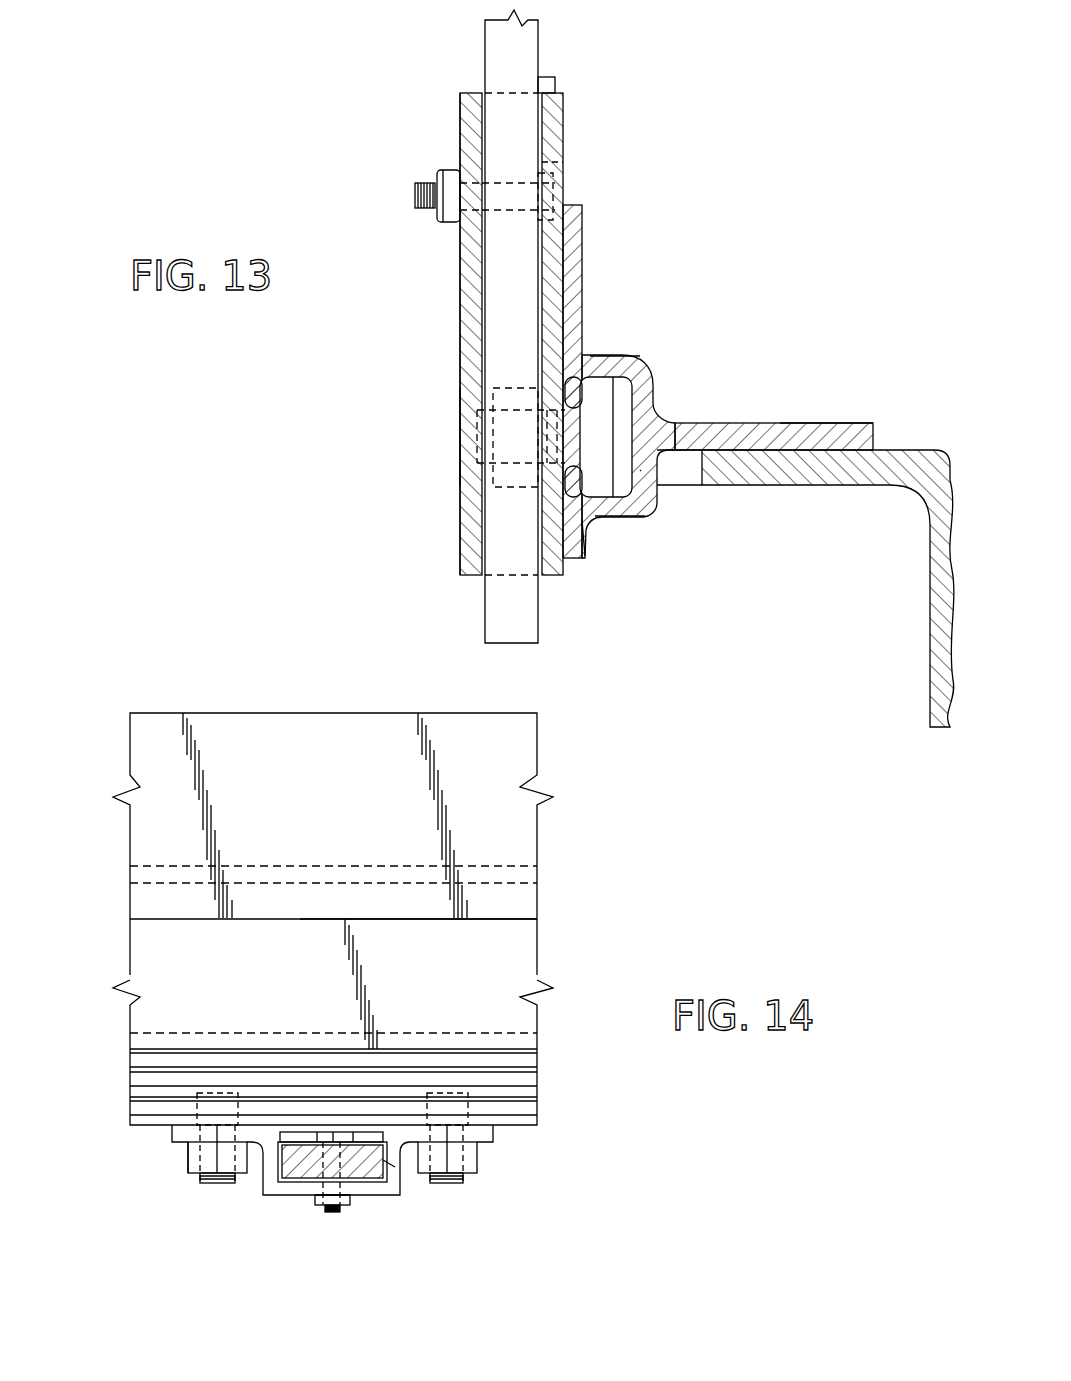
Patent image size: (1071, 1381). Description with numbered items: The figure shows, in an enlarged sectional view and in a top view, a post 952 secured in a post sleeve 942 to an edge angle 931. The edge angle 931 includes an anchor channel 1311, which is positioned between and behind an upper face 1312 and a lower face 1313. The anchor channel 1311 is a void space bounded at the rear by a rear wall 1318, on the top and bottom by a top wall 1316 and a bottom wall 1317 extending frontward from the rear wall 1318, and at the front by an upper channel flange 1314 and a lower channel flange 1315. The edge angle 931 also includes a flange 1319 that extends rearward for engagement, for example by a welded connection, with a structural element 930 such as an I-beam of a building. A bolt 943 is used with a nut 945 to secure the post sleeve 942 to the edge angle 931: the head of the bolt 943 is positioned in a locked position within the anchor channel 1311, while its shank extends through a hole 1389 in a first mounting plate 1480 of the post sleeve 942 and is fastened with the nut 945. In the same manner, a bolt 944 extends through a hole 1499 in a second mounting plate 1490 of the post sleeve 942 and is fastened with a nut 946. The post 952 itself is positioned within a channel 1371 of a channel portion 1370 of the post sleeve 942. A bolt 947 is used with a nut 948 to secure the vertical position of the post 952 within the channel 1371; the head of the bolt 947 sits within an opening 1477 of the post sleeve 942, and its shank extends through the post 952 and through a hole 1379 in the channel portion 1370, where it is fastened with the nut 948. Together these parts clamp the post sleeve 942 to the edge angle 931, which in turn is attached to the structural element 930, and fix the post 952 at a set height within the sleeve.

In FIG. 13, the structural element 930 is at (900, 455).
In FIG. 14, the structural element 930 is at (270, 733).
In FIG. 13, the edge angle 931 is at (684, 420).
In FIG. 14, the edge angle 931 is at (174, 943).
In FIG. 13, the post sleeve 942 is at (442, 428).
In FIG. 14, the post sleeve 942 is at (212, 1212).
In FIG. 13, the bolt 943 is at (640, 470).
In FIG. 14, the bolt 943 is at (200, 1180).
In FIG. 14, the bolt 944 is at (452, 1183).
In FIG. 13, the nut 945 is at (498, 468).
In FIG. 14, the nut 945 is at (200, 1180).
In FIG. 14, the nut 946 is at (477, 1160).
In FIG. 13, the bolt 947 is at (415, 195).
In FIG. 14, the bolt 947 is at (343, 1215).
In FIG. 13, the nut 948 is at (447, 222).
In FIG. 14, the nut 948 is at (350, 1200).
In FIG. 13, the post 952 is at (523, 48).
In FIG. 14, the post 952 is at (395, 1167).
In FIG. 13, the anchor channel 1311 is at (634, 372).
In FIG. 14, the anchor channel 1311 is at (519, 1092).
In FIG. 13, the upper face 1312 is at (585, 220).
In FIG. 13, the lower face 1313 is at (587, 533).
In FIG. 13, the upper channel flange 1314 is at (566, 358).
In FIG. 13, the lower channel flange 1315 is at (575, 483).
In FIG. 13, the top wall 1316 is at (605, 360).
In FIG. 13, the bottom wall 1317 is at (612, 522).
In FIG. 13, the rear wall 1318 is at (605, 483).
In FIG. 13, the flange 1319 is at (812, 422).
In FIG. 14, the flange 1319 is at (515, 940).
In FIG. 13, the channel portion 1370 is at (455, 102).
In FIG. 14, the channel portion 1370 is at (262, 1196).
In FIG. 13, the channel 1371 is at (478, 100).
In FIG. 14, the channel 1371 is at (292, 1182).
In FIG. 13, the hole 1379 is at (462, 180).
In FIG. 14, the hole 1379 is at (312, 1190).
In FIG. 13, the hole 1389 is at (550, 388).
In FIG. 14, the hole 1389 is at (182, 1120).
In FIG. 14, the opening 1477 is at (348, 1139).
In FIG. 14, the first mounting plate 1480 is at (175, 1133).
In FIG. 14, the second mounting plate 1490 is at (490, 1132).
In FIG. 14, the hole 1499 is at (472, 1125).